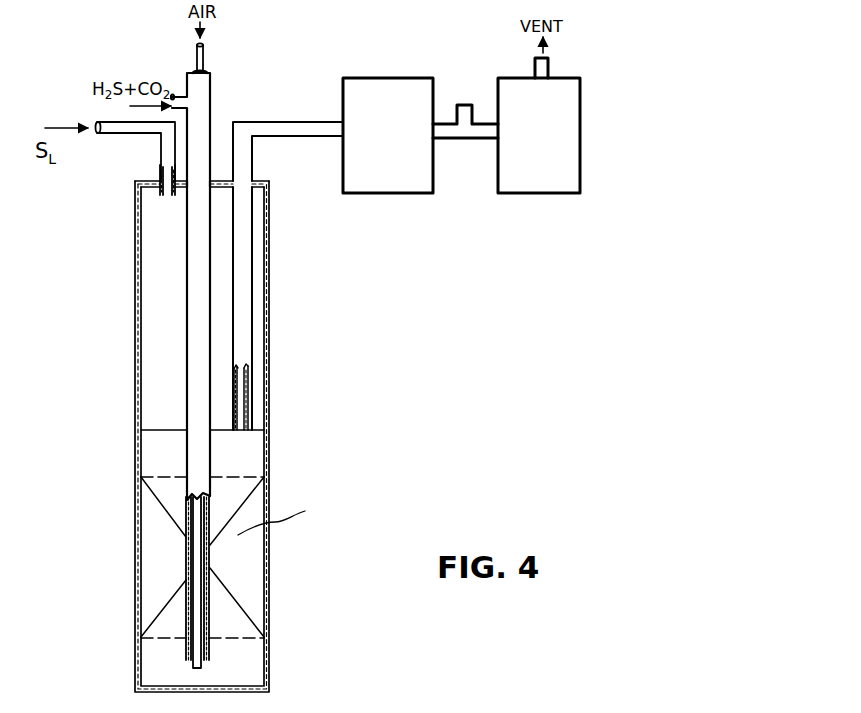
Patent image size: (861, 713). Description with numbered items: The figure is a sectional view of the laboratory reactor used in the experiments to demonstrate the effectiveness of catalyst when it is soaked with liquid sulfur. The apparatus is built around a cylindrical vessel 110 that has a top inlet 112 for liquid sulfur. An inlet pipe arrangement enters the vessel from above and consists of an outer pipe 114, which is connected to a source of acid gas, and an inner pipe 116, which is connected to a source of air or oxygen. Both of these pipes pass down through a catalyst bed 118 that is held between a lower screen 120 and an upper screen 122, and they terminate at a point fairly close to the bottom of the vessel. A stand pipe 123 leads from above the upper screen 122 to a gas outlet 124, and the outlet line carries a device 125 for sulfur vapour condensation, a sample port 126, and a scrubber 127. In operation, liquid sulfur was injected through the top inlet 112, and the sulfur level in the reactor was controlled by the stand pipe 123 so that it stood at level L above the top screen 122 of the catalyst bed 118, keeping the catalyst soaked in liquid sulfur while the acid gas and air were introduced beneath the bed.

The cylindrical vessel 110 is at (269, 396).
The top inlet 112 is at (102, 138).
The outer pipe 114 is at (211, 97).
The inner pipe 116 is at (205, 73).
The catalyst bed 118 is at (247, 538).
The screen 120 is at (265, 621).
The screen 122 is at (231, 476).
The stand pipe 123 is at (253, 353).
The gas outlet 124 is at (297, 133).
The device for sulfur vapour condensation 125 is at (391, 77).
The sample port 126 is at (469, 105).
The scrubber 127 is at (582, 107).
The level L is at (253, 429).